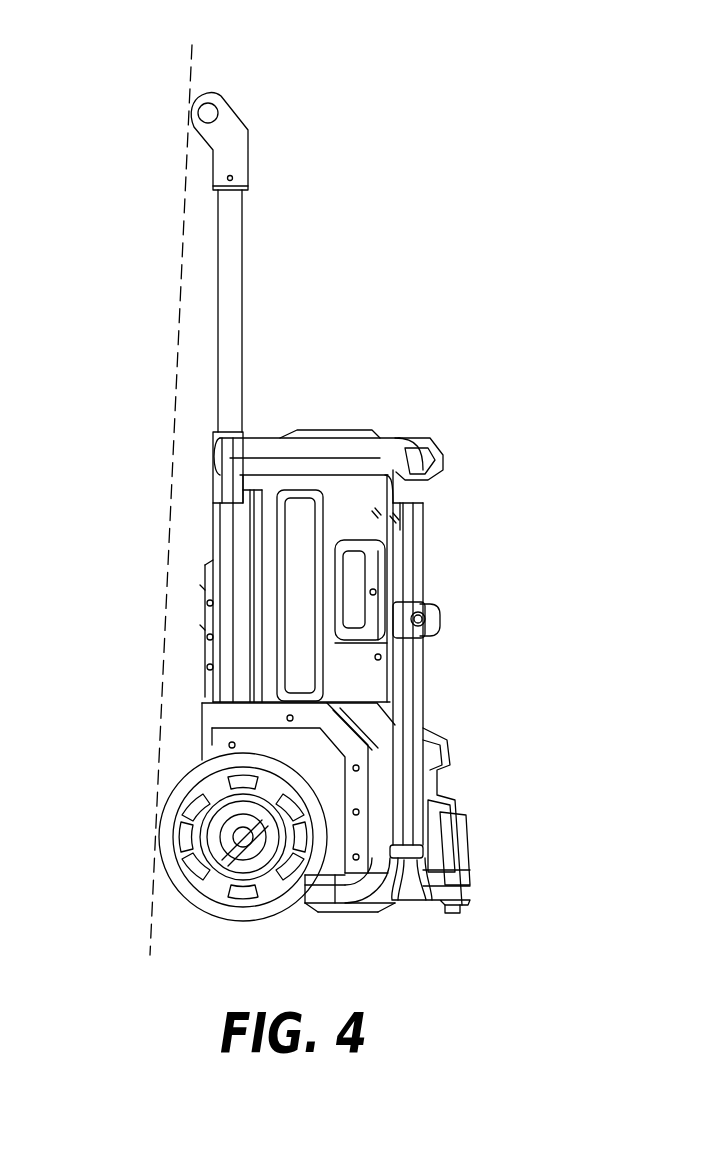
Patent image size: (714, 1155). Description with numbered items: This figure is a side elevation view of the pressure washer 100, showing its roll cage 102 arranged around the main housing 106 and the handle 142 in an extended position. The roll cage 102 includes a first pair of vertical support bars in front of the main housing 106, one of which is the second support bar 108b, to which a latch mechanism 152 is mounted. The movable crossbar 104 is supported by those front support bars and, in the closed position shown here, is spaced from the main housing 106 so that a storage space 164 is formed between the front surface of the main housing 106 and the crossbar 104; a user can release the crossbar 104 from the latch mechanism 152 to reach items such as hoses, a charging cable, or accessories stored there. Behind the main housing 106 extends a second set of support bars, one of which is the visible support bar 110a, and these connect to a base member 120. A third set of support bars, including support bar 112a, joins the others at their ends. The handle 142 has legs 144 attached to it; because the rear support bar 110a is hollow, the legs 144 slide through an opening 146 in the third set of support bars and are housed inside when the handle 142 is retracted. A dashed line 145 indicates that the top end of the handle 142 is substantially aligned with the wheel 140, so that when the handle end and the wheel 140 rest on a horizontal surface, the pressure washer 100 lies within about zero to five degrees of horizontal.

The pressure washer 100 is at (349, 63).
The roll cage 102 is at (450, 410).
The crossbar 104 is at (437, 617).
The main housing 106 is at (268, 648).
The second support bar 108b is at (428, 745).
The support bar 110a is at (215, 560).
The support bar 112a is at (335, 438).
The base member 120 is at (212, 720).
The wheel 140 is at (160, 828).
The handle 142 is at (192, 95).
The leg 144 is at (222, 262).
The dashed line 145 is at (188, 158).
The opening 146 is at (220, 432).
The latch mechanism 152 is at (432, 637).
The storage space 164 is at (410, 555).